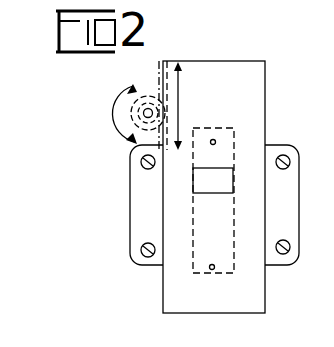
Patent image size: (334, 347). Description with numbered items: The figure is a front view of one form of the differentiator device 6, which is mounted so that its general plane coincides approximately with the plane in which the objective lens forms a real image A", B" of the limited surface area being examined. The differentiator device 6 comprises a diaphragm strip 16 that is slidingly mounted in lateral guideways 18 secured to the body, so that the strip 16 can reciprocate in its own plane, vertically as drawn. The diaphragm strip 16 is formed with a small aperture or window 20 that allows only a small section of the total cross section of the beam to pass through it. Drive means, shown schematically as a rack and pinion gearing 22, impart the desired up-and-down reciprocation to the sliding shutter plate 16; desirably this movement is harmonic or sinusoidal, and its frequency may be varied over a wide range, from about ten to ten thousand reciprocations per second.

The differentiator device 6 is at (269, 70).
The diaphragm strip 16 is at (241, 197).
The lateral guideways 18 is at (287, 197).
The aperture or window 20 is at (228, 186).
The rack and pinion gearing 22 is at (139, 108).
The real image point A" A'' is at (250, 120).
The real image point B" B'' is at (249, 279).